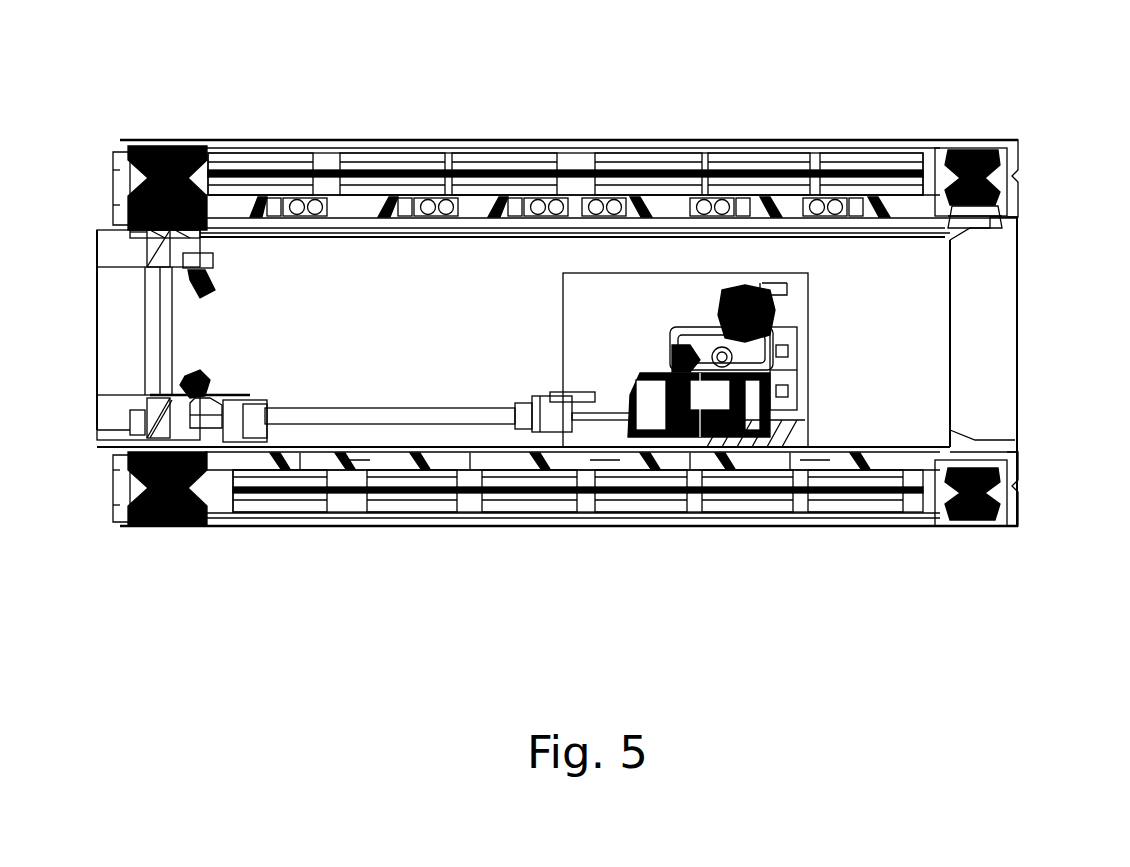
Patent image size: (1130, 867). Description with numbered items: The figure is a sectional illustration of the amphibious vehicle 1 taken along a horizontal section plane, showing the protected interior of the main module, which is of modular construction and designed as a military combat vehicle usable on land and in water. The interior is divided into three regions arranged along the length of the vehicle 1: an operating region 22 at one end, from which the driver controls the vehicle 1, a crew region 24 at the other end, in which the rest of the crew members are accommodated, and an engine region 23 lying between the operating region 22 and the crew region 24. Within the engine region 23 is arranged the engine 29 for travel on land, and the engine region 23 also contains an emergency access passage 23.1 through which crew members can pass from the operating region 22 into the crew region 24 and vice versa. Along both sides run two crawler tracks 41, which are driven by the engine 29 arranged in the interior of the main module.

The amphibious vehicle 1 is at (600, 338).
The operating region 22 is at (925, 342).
The engine region 23 is at (638, 343).
The emergency access passage 23.1 is at (738, 252).
The crew region 24 is at (396, 372).
The engine 29 is at (742, 372).
The crawler tracks 41 is at (660, 165).